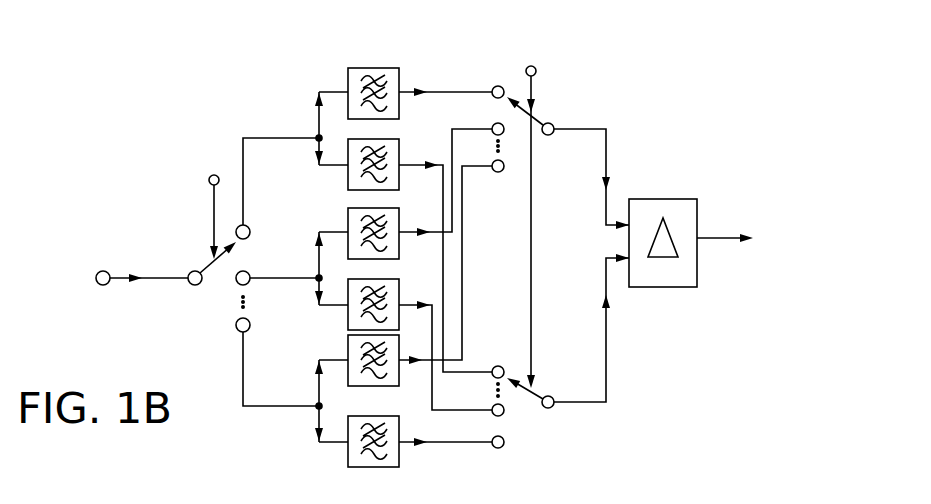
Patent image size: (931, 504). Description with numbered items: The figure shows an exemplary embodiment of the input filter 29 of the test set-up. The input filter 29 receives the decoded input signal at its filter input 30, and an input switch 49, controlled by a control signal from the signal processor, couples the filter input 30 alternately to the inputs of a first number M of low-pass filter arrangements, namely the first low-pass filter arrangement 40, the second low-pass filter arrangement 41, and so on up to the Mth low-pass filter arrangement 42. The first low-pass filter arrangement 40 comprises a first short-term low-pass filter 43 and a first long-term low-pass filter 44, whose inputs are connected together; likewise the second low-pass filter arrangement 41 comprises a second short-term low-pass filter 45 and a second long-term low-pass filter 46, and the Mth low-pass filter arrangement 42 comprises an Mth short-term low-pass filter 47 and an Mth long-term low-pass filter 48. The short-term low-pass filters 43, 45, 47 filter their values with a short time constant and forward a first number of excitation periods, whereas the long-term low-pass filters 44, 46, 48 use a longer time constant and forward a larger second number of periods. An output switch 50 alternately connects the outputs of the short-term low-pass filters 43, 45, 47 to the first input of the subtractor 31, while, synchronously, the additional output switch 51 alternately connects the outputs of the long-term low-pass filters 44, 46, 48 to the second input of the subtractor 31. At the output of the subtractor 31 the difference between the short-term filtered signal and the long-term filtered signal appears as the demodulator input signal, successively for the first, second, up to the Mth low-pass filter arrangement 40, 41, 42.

The input filter 29 is at (630, 69).
The filter input 30 is at (101, 271).
The input switch 49 is at (208, 266).
The first low-pass filter arrangement 40 is at (330, 88).
The second low-pass filter arrangement 41 is at (333, 230).
The Mth low-pass filter arrangement 42 is at (331, 448).
The first short-term low-pass filter 43 is at (401, 73).
The first long-term low-pass filter 44 is at (400, 142).
The second short-term low-pass filter 45 is at (400, 215).
The second long-term low-pass filter 46 is at (400, 285).
The Mth short-term low-pass filter 47 is at (378, 386).
The Mth long-term low-pass filter 48 is at (378, 467).
The output switch 50 is at (540, 120).
The additional output switch 51 is at (542, 407).
The subtractor 31 is at (667, 198).